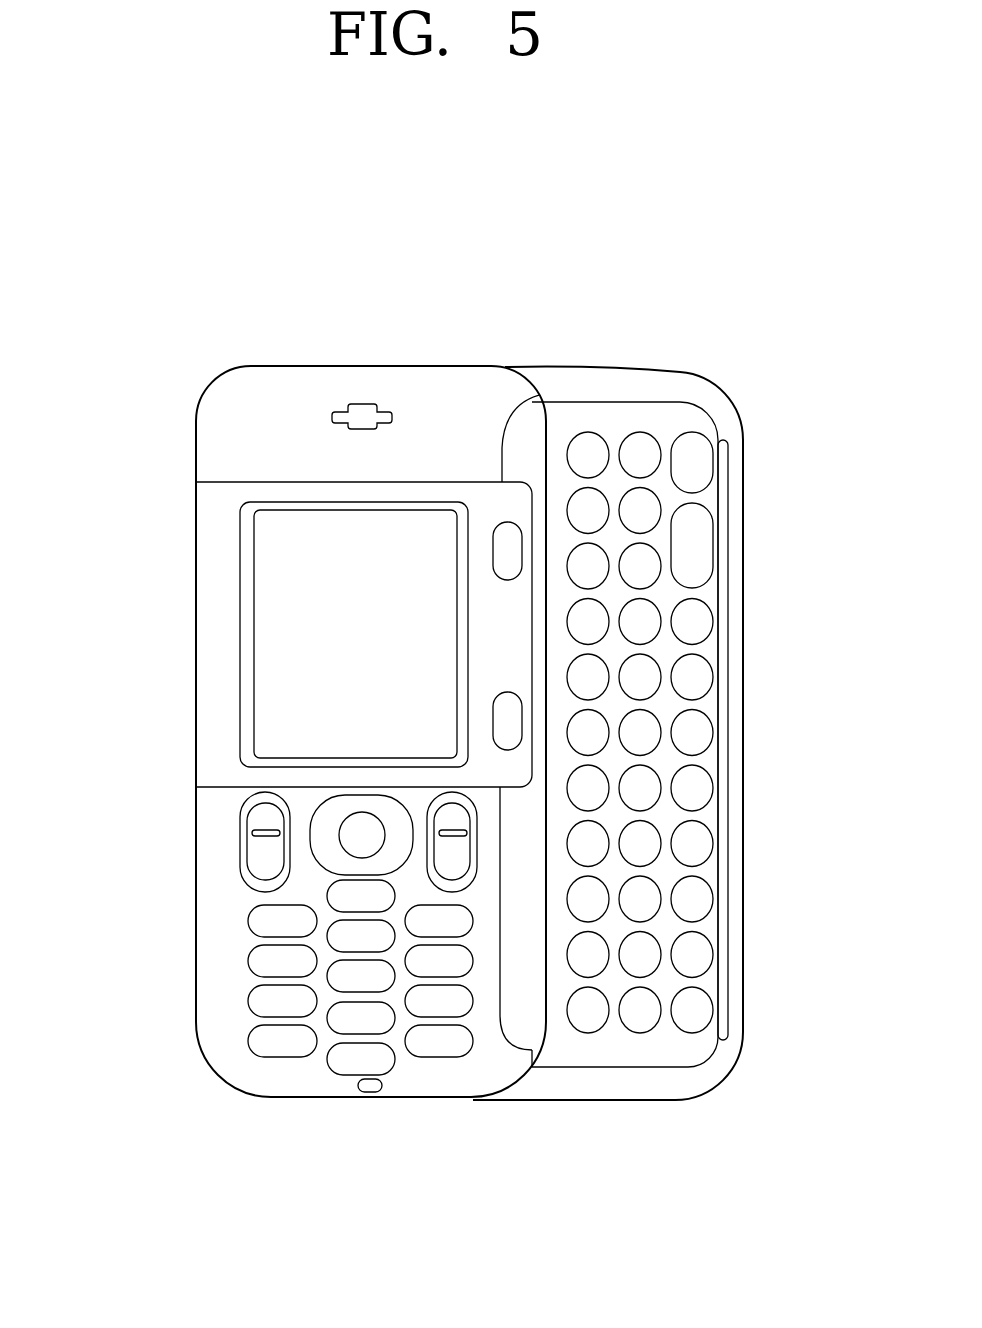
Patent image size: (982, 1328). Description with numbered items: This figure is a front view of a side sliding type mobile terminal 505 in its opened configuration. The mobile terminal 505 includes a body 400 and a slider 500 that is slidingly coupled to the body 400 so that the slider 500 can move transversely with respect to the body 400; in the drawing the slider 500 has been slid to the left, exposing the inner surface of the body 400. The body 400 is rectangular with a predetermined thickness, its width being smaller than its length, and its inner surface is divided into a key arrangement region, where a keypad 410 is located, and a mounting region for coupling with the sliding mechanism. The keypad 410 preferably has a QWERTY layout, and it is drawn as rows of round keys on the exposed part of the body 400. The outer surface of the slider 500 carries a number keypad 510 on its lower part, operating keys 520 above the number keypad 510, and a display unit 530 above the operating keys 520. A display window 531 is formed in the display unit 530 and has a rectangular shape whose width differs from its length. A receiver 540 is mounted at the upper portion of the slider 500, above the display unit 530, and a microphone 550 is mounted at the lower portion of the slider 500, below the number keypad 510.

The side sliding type mobile terminal 505 is at (517, 300).
The slider 500 is at (215, 372).
The body 400 is at (747, 390).
The keypad 410 is at (743, 669).
The display unit 530 is at (238, 558).
The display window 531 is at (287, 658).
The receiver 540 is at (377, 392).
The microphone 550 is at (368, 1108).
The operating keys 520 is at (228, 792).
The number keypad 510 is at (228, 902).